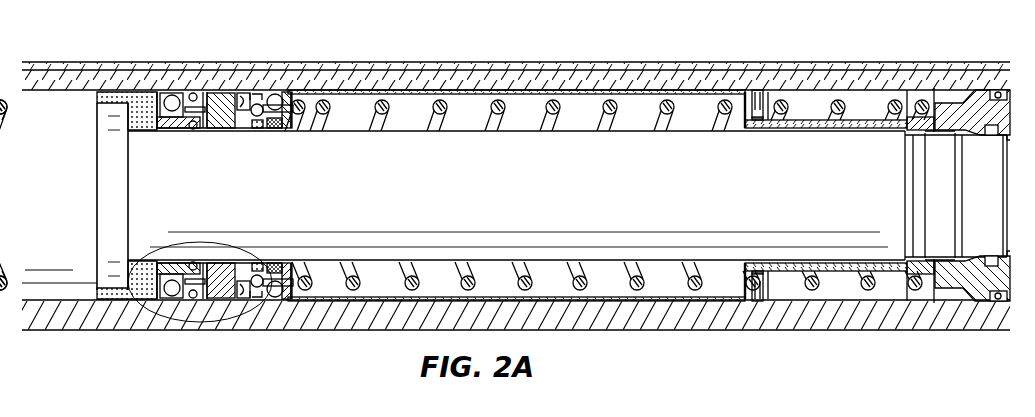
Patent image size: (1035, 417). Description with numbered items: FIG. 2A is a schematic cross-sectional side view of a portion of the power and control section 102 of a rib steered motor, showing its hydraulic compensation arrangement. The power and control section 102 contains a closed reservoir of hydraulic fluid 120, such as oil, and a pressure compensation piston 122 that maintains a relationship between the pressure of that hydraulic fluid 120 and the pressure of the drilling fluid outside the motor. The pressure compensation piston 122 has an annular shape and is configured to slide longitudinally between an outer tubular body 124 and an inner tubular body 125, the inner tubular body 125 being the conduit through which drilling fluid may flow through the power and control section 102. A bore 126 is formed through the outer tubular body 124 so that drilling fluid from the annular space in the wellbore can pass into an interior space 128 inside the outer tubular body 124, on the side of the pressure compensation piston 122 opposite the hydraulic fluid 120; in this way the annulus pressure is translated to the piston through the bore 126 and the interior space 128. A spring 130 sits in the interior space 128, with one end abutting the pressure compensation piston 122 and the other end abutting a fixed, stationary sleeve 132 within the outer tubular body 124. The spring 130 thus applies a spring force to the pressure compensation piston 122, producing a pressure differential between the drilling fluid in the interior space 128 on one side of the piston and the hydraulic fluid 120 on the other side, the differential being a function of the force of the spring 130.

The power and control section 102 is at (190, 38).
The hydraulic fluid 120 is at (143, 104).
The pressure compensation piston 122 is at (246, 80).
The outer tubular body 124 is at (460, 82).
The inner tubular body 125 is at (858, 152).
The bore 126 is at (760, 113).
The interior space 128 is at (638, 107).
The spring 130 is at (604, 101).
The sleeve 132 is at (928, 104).